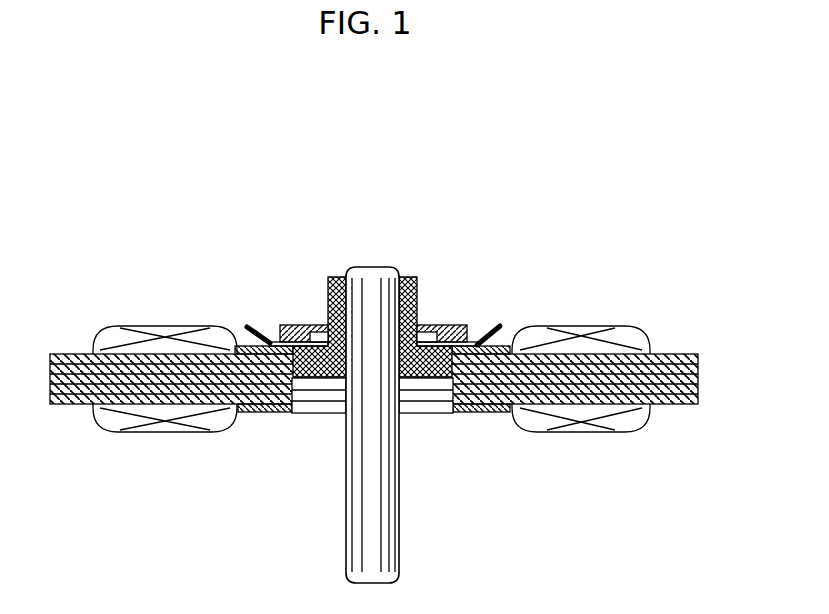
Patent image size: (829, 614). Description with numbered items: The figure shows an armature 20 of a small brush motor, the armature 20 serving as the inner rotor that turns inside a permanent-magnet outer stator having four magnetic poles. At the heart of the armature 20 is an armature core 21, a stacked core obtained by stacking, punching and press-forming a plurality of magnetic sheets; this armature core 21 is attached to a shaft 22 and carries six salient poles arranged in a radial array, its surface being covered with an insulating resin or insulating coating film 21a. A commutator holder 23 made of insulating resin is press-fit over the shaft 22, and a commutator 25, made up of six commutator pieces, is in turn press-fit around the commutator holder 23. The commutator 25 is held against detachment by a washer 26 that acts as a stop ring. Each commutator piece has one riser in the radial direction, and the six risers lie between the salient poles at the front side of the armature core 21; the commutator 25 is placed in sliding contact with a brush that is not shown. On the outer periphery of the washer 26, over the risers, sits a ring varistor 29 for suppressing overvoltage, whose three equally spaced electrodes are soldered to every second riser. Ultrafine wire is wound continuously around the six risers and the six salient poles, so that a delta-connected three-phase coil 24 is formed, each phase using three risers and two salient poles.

The armature 20 is at (105, 236).
The armature core 21 is at (700, 370).
The insulating coating film 21a is at (510, 347).
The shaft 22 is at (403, 530).
The commutator holder 23 is at (322, 385).
The three-phase coil 24 is at (592, 326).
The commutator 25 is at (420, 287).
The washer 26 is at (437, 325).
The ring varistor 29 is at (292, 325).